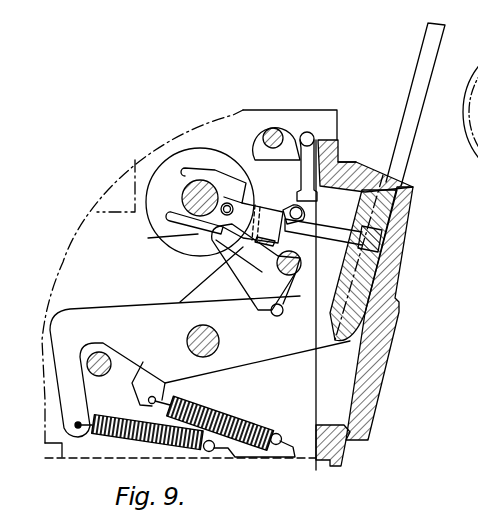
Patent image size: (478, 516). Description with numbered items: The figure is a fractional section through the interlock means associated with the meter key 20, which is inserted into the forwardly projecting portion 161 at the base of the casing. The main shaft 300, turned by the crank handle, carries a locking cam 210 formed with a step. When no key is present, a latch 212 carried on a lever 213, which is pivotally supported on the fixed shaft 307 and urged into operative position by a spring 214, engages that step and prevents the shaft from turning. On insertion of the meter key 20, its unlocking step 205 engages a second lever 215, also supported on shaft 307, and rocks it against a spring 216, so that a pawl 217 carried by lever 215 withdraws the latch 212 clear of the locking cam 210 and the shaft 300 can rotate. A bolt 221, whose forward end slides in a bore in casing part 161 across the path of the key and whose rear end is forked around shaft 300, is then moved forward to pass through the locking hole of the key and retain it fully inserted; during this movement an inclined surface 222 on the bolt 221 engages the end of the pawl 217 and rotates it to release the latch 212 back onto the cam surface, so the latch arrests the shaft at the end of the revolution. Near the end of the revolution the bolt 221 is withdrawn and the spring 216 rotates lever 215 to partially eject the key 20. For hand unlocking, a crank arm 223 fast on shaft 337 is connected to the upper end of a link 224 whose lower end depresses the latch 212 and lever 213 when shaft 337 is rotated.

The meter key 20 is at (413, 91).
The forwardly projecting portion of the casing 161 is at (383, 332).
The unlocking step 205 is at (380, 345).
The locking cam 210 is at (221, 163).
The latch 212 is at (285, 204).
The lever 213 is at (210, 288).
The spring 214 is at (217, 413).
The lever 215 is at (104, 316).
The spring 216 is at (117, 440).
The pawl 217 is at (238, 253).
The bolt 221 is at (332, 237).
The inclined surface 222 is at (150, 238).
The crank arm 223 is at (297, 112).
The link 224 is at (333, 165).
The shaft 300 is at (183, 196).
The fixed shaft 307 is at (219, 346).
The shaft 337 is at (269, 128).